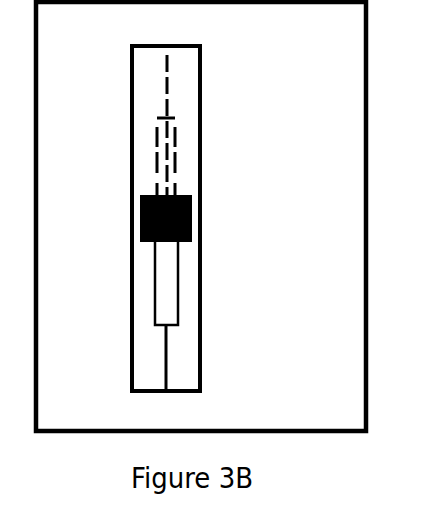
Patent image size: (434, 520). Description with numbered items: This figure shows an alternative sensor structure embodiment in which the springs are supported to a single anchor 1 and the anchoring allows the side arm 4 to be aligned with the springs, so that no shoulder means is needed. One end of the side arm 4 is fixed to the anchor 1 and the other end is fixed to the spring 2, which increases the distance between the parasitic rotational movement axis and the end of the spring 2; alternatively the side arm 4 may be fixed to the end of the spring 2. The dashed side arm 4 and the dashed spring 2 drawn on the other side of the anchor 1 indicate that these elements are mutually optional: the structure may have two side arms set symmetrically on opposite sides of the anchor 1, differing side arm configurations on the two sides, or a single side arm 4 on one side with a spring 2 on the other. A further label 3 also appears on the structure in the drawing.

The anchor 1 is at (166, 218).
The spring 2 is at (172, 183).
The housing (zones Z1, Z2) 3 is at (240, 218).
The side arm 4 is at (155, 145).